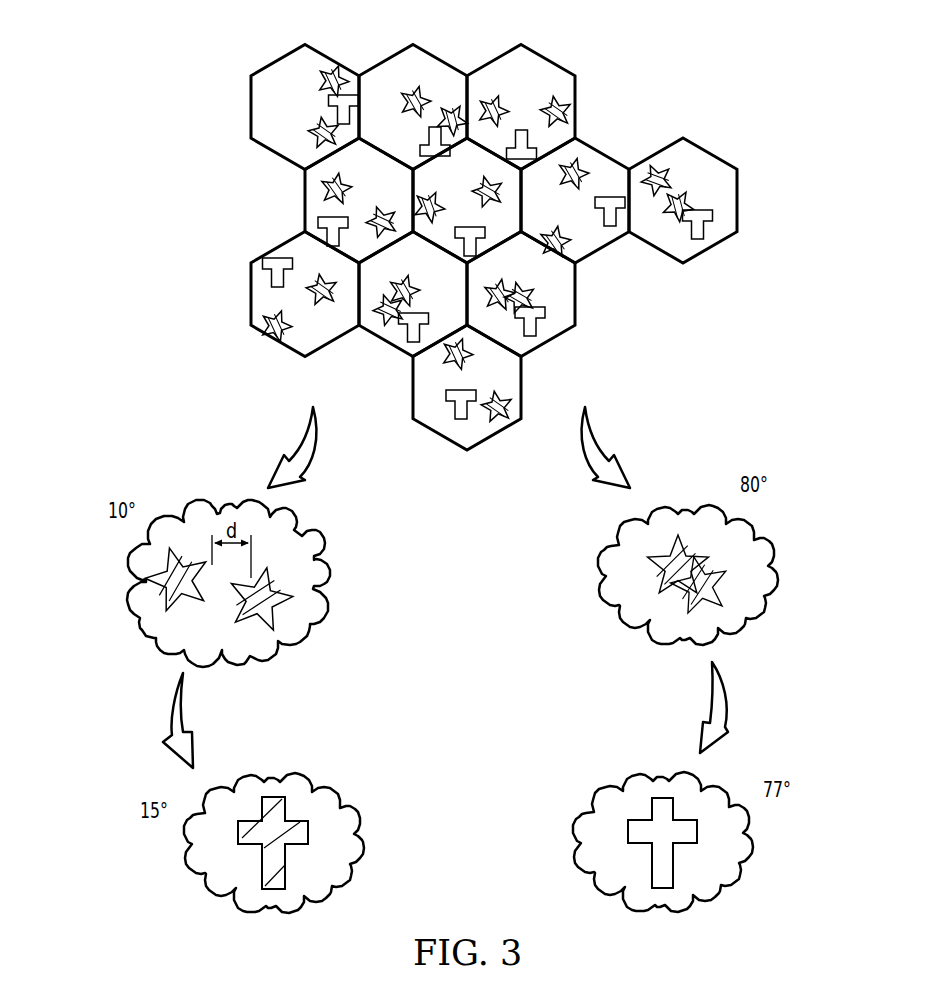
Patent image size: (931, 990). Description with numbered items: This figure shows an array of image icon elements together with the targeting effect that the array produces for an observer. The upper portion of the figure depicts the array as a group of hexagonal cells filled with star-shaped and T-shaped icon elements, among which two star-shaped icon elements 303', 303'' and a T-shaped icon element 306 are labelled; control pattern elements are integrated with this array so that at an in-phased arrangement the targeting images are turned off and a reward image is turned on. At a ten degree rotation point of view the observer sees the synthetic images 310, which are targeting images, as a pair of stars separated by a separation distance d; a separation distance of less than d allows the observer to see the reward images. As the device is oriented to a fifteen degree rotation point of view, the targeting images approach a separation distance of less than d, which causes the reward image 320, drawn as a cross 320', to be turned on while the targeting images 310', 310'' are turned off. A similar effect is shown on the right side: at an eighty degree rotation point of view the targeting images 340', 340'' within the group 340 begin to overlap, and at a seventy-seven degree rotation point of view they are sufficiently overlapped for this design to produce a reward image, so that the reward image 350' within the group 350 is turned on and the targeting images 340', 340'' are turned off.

The first star-shaped feature 303' is at (392, 60).
The second star-shaped feature 303'' is at (476, 65).
The T-shaped feature 306 is at (273, 258).
The synthetic images 310 is at (268, 583).
The targeting image 310' is at (311, 596).
The targeting image 310'' is at (131, 584).
The cluster at 80 degrees 340 is at (645, 571).
The targeting image 340' is at (615, 564).
The targeting image 340'' is at (758, 583).
The reward image 320 is at (317, 841).
The cross-shaped feature in cluster 320 320' is at (219, 860).
The cluster at 77 degrees 350 is at (622, 838).
The reward image 350' is at (718, 861).